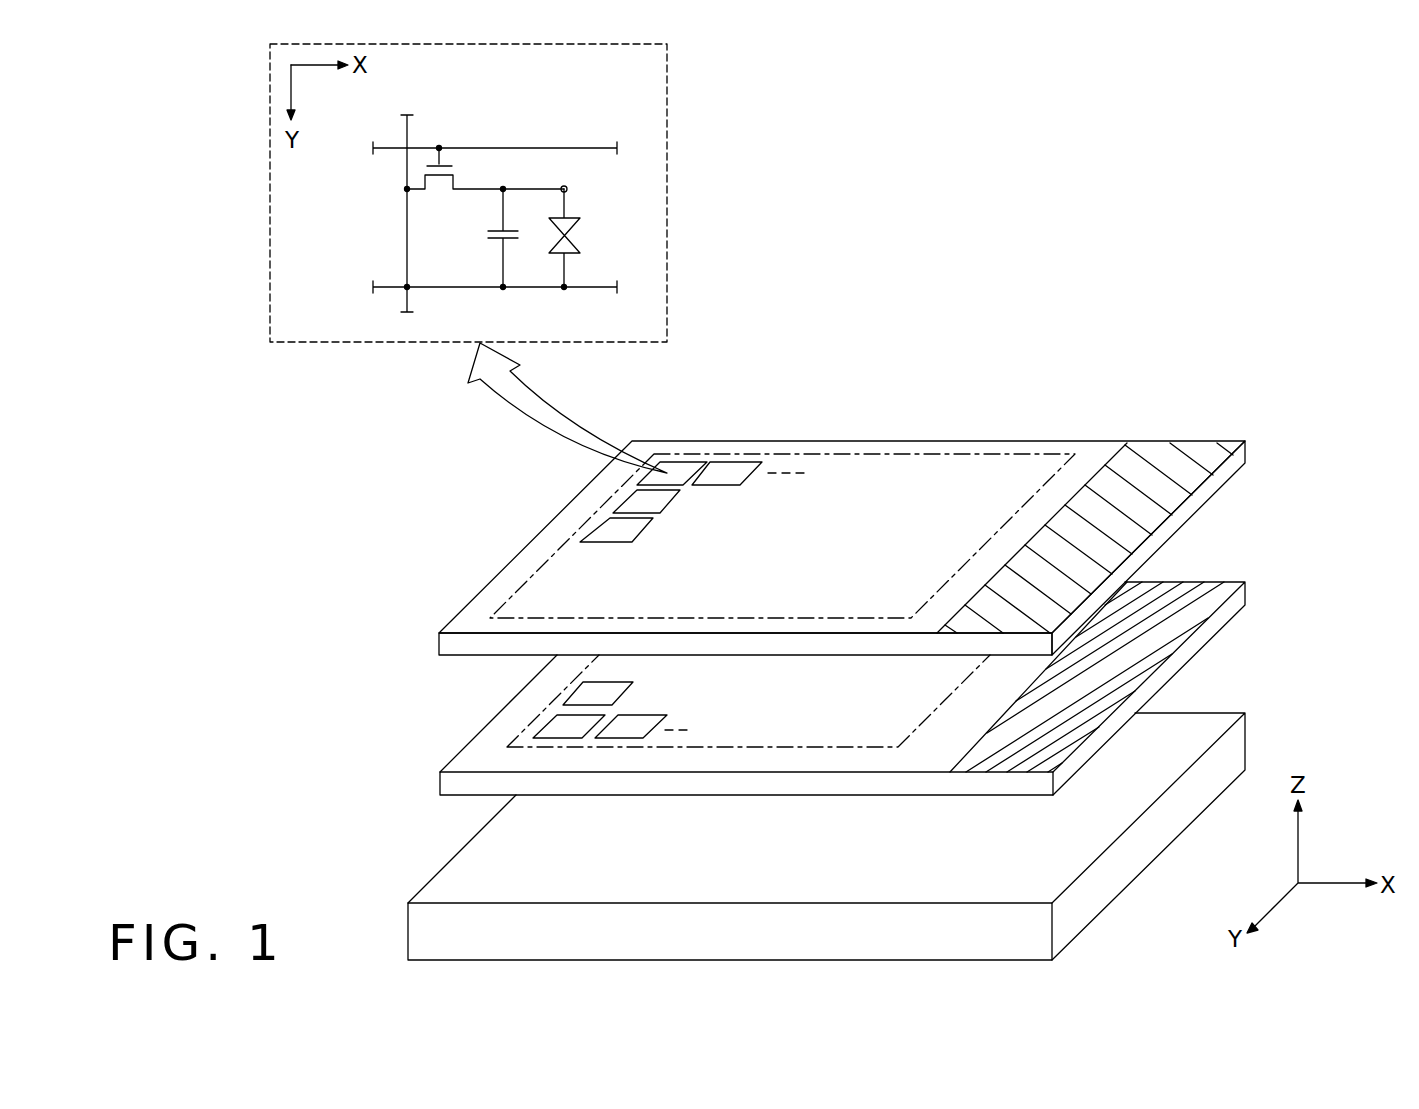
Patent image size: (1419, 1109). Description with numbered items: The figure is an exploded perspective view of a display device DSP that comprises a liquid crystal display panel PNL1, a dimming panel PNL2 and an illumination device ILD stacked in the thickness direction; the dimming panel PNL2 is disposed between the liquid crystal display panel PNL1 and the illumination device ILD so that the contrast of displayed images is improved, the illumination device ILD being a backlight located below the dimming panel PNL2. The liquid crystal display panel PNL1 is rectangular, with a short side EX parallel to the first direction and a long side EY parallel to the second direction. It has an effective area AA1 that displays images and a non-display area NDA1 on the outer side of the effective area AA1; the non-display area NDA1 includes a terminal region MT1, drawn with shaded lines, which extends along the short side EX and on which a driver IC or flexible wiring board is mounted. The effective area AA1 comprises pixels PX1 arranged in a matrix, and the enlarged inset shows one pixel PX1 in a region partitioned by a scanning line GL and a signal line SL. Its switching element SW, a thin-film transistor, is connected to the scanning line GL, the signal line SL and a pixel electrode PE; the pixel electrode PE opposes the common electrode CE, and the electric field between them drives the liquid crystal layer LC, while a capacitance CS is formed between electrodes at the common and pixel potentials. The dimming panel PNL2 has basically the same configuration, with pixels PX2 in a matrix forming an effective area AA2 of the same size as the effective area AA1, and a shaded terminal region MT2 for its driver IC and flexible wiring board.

The pixel PX1 is at (668, 148).
The scanning line GL is at (389, 147).
The signal line SL is at (406, 232).
The switching element SW is at (472, 176).
The pixel electrode PE is at (568, 189).
The capacitance CS is at (476, 240).
The liquid crystal layer LC is at (592, 231).
The common electrode CE is at (590, 289).
The display device DSP is at (496, 480).
The liquid crystal display panel PNL1 is at (438, 645).
The effective area AA1 is at (825, 455).
The non-display area NDA1 is at (995, 450).
The terminal region MT1 is at (1152, 452).
The short side EX is at (1237, 489).
The dimming panel PNL2 is at (439, 783).
The terminal region MT2 is at (1200, 593).
The effective area AA2 is at (520, 740).
The pixel PX2 is at (581, 697).
The long side EY is at (794, 664).
The illumination device ILD is at (407, 933).